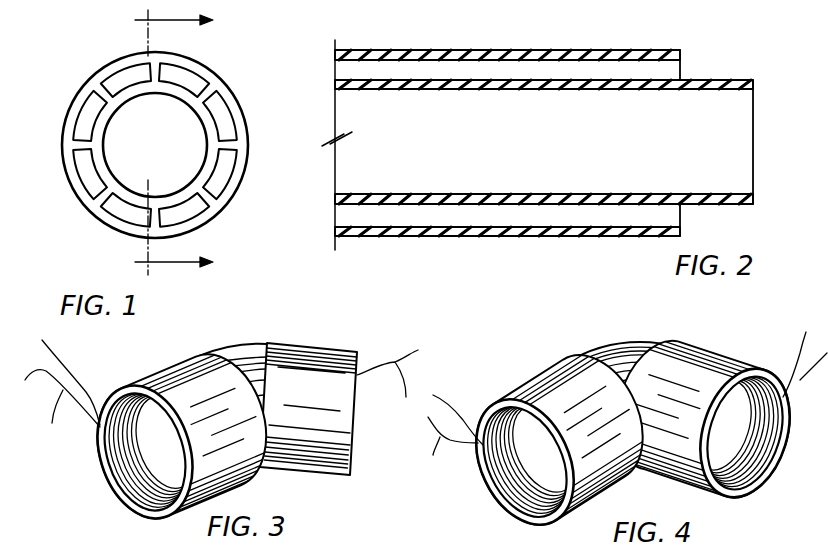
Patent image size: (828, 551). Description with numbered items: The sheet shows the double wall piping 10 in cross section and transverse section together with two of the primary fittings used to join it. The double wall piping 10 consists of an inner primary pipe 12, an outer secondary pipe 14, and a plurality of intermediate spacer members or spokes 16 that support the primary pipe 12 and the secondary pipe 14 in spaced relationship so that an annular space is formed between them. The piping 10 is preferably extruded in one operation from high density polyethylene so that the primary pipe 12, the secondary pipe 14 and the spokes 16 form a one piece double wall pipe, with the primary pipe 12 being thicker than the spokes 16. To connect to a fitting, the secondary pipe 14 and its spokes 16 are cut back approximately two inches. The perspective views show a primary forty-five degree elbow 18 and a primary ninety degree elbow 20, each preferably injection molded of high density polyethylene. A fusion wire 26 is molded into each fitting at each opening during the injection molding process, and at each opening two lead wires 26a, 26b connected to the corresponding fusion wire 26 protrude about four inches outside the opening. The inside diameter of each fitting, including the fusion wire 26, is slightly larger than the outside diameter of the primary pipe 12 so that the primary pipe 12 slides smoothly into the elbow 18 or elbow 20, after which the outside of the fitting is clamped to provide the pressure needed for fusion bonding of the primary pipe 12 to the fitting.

In FIG. 1, the double wall piping 10 is at (156, 144).
In FIG. 2, the double wall piping 10 is at (537, 146).
In FIG. 1, the inner primary pipe 12 is at (137, 95).
In FIG. 2, the inner primary pipe 12 is at (589, 90).
In FIG. 1, the outer secondary pipe 14 is at (118, 61).
In FIG. 2, the outer secondary pipe 14 is at (498, 237).
In FIG. 1, the spacer members or spokes 16 is at (82, 138).
In FIG. 2, the spacer members or spokes 16 is at (564, 70).
In FIG. 3, the primary 45° elbow 18 is at (220, 426).
In FIG. 4, the primary 90° elbow 20 is at (618, 420).
In FIG. 3, the fusion wire 26 is at (150, 465).
In FIG. 4, the fusion wire 26 is at (730, 453).
In FIG. 3, the lead wire 26a is at (61, 397).
In FIG. 4, the lead wire 26a is at (618, 419).
In FIG. 3, the lead wire 26b is at (80, 376).
In FIG. 4, the lead wire 26b is at (458, 400).